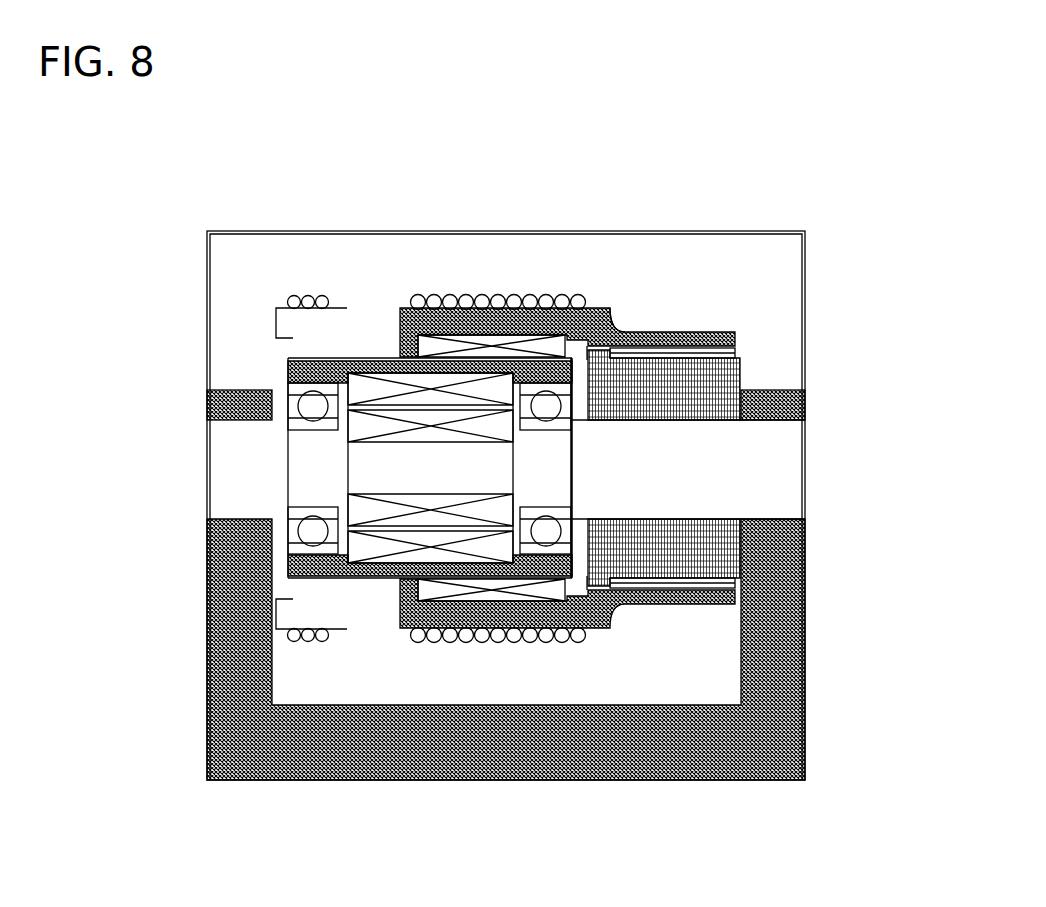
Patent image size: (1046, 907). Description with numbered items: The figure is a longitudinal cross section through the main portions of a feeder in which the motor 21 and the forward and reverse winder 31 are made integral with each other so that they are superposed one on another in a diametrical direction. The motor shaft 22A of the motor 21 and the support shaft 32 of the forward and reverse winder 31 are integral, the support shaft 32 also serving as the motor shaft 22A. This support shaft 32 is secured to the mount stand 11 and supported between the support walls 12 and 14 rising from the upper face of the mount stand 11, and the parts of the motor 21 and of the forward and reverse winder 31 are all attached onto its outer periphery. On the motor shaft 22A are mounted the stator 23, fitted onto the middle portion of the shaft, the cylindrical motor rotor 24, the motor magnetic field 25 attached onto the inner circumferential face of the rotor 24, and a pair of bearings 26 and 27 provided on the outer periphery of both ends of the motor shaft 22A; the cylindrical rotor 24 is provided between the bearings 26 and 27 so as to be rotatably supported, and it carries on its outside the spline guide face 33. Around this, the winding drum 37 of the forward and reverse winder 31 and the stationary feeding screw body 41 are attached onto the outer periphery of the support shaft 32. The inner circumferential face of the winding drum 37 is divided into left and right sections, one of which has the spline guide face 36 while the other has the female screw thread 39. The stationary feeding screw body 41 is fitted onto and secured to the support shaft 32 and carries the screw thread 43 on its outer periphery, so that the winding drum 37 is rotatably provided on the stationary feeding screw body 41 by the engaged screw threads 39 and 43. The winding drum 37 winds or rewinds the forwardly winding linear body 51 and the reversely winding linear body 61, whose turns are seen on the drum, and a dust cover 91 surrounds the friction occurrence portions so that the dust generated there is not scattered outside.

The mount stand 11 is at (222, 779).
The support wall 12 is at (228, 400).
The support wall 14 is at (790, 391).
The motor 21 is at (378, 585).
The motor shaft 22A is at (377, 472).
The stator 23 is at (367, 427).
The cylindrical motor rotor 24 is at (361, 574).
The motor magnetic field 25 is at (433, 388).
The bearing 26 is at (312, 532).
The bearing 27 is at (547, 533).
The forward and reverse winder 31 is at (664, 330).
The support shaft 32 is at (757, 478).
The spline guide face 33 is at (363, 362).
The spline guide face 36 is at (492, 586).
The winding drum 37 is at (284, 318).
The female screw thread 39 is at (700, 333).
The stationary feeding screw body 41 is at (718, 380).
The screw thread 43 is at (602, 352).
The forwardly winding linear body 51 is at (576, 296).
The reversely winding linear body 61 is at (417, 295).
The dust cover 91 is at (807, 447).